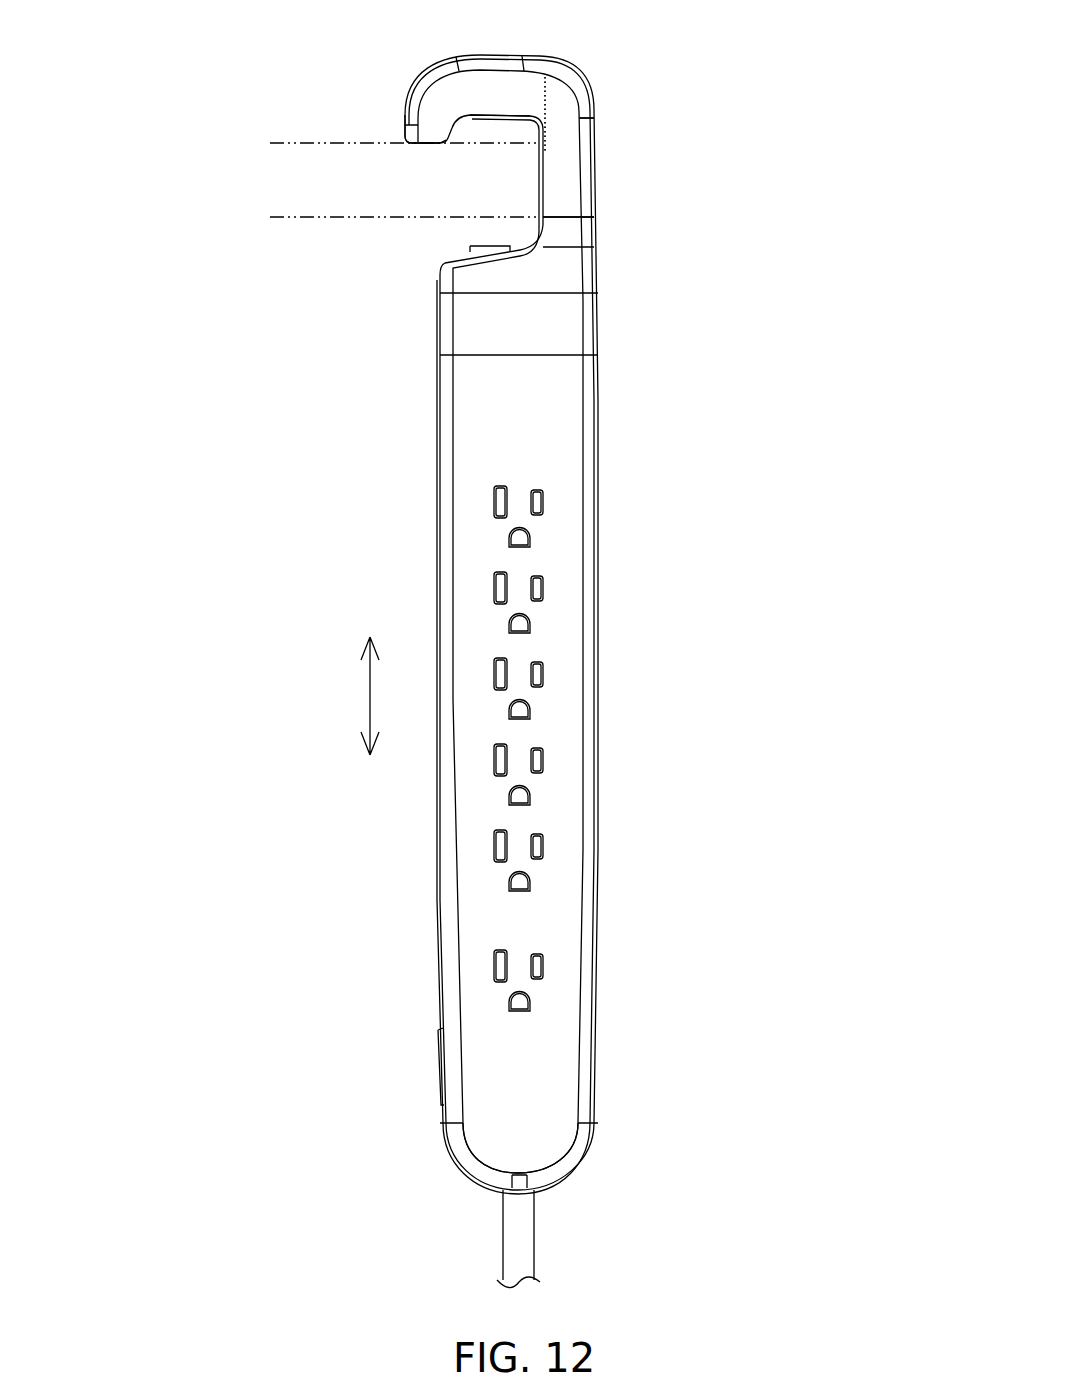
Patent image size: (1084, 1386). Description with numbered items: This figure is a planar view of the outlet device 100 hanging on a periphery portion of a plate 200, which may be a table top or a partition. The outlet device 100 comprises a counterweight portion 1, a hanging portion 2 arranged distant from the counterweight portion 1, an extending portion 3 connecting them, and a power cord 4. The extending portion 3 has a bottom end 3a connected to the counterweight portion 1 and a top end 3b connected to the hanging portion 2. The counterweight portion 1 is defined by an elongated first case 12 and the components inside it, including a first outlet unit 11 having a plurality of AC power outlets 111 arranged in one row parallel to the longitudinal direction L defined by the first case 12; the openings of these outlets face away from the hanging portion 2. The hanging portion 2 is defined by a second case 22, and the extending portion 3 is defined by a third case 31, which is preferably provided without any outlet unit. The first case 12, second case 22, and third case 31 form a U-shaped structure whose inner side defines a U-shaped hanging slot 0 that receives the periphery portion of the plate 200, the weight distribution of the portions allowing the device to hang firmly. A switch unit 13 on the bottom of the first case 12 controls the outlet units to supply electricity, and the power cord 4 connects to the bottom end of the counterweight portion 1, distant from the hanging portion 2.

The outlet device 100 is at (541, 645).
The counterweight portion 1 is at (598, 402).
The first outlet unit 11 is at (616, 748).
The AC power outlet 111 is at (545, 503).
The first case 12 is at (555, 1060).
The switch unit 13 is at (440, 1105).
The hanging portion 2 is at (413, 77).
The second case 22 is at (483, 92).
The extending portion 3 is at (597, 186).
The third case 31 is at (568, 148).
The bottom end of the extending portion 3a is at (577, 226).
The top end of the extending portion 3b is at (540, 85).
The power cord 4 is at (533, 1233).
The plate 200 is at (312, 140).
The U-shaped hanging slot 0 is at (455, 241).
The longitudinal direction L is at (358, 696).